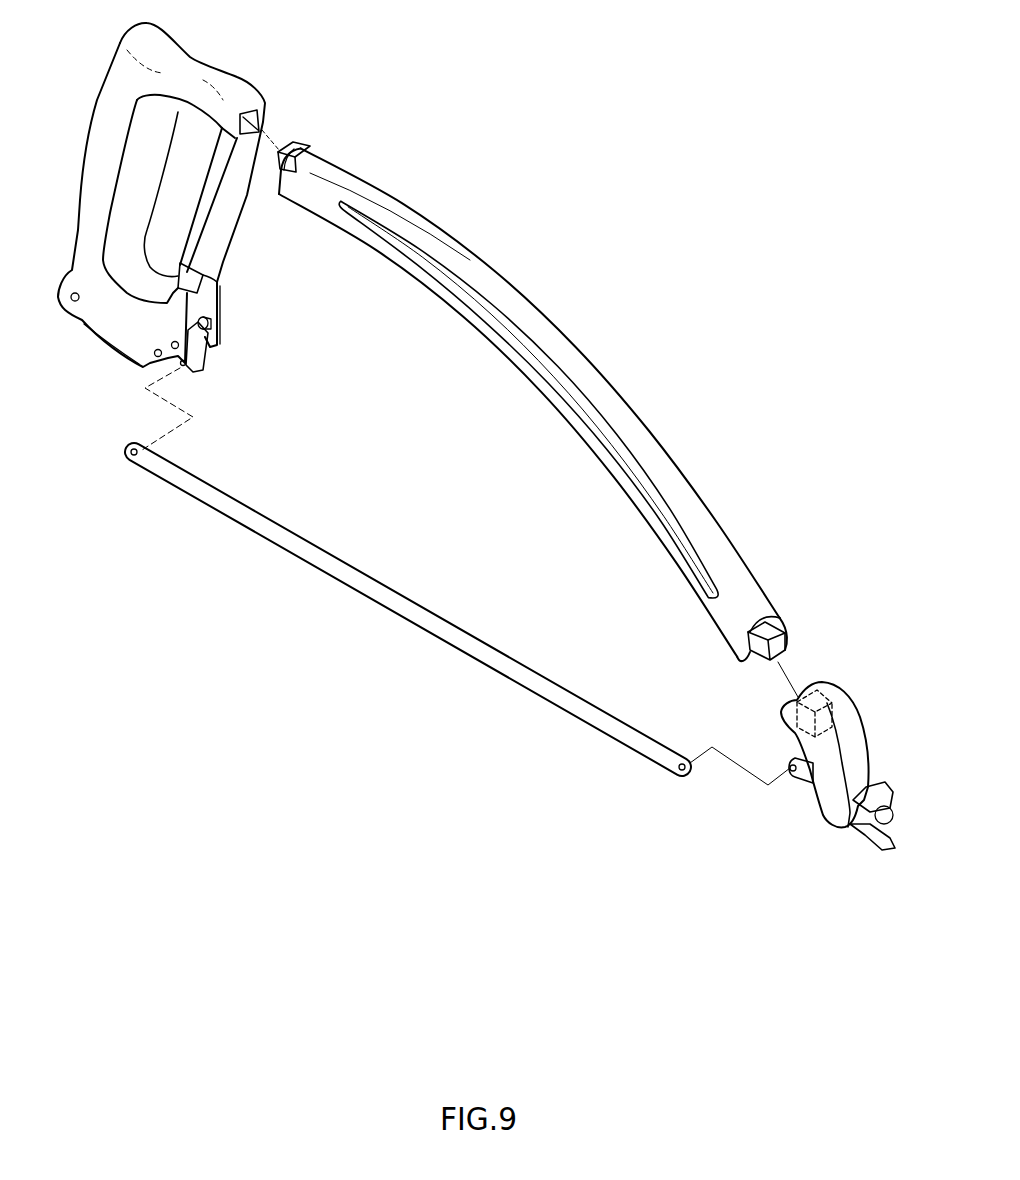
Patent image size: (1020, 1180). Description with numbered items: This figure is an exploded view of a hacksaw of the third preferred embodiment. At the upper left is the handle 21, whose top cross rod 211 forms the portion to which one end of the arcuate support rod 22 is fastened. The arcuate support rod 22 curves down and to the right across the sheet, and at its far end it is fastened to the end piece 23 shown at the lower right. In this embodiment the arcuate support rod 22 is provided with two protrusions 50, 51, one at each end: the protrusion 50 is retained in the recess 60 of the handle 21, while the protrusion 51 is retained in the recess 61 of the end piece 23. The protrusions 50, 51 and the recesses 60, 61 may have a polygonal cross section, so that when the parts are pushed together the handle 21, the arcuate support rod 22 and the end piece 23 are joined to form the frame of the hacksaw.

The handle 21 is at (83, 160).
The top cross rod 211 is at (193, 80).
The recess 60 is at (265, 117).
The protrusion 50 is at (303, 147).
The arcuate support rod 22 is at (598, 400).
The protrusion 51 is at (773, 638).
The recess 61 is at (827, 697).
The end piece 23 is at (858, 733).